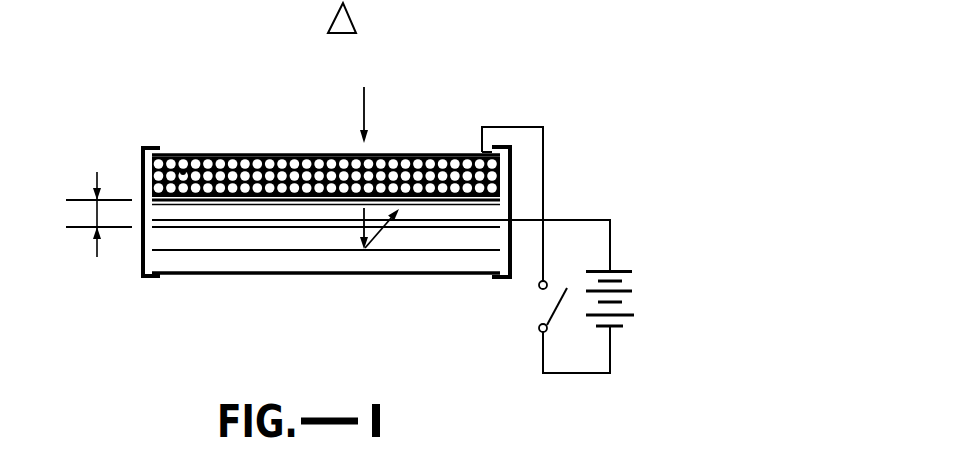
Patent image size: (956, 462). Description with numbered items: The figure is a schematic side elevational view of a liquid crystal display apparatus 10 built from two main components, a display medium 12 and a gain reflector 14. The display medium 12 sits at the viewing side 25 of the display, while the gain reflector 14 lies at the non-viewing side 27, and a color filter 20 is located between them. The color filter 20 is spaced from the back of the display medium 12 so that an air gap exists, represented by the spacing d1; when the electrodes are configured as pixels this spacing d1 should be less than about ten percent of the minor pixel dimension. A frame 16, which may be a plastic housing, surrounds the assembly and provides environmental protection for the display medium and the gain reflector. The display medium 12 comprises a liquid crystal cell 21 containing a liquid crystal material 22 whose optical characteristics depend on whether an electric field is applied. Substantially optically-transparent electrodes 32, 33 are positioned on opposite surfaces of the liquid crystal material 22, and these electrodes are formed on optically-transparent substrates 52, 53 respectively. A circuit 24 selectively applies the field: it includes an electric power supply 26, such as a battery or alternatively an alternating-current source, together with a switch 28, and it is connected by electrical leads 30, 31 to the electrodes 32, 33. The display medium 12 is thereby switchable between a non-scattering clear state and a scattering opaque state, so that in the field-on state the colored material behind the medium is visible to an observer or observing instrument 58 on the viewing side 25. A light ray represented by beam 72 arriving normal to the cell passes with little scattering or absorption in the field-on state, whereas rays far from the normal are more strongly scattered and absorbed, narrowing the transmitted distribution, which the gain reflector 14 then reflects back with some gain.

The liquid crystal display apparatus 10 is at (530, 90).
The display medium 12 is at (326, 136).
The gain reflector 14 is at (392, 276).
The frame 16 is at (141, 277).
The color filter 20 is at (282, 229).
The liquid crystal cell 21 is at (183, 170).
The liquid crystal material 22 is at (443, 165).
The circuit 24 is at (637, 293).
The viewing side 25 is at (490, 34).
The electric power supply 26 is at (623, 292).
The non-viewing side 27 is at (490, 393).
The switch 28 is at (550, 303).
The electrical lead 30 is at (543, 165).
The electrical lead 31 is at (587, 218).
The electrode 32 is at (327, 160).
The electrode 33 is at (200, 207).
The optically-transparent substrate 52 is at (296, 155).
The optically-transparent substrate 53 is at (223, 206).
The observer or observing instrument 58 is at (331, 18).
The light ray beam 72 is at (364, 105).
The spacing d1 is at (100, 212).